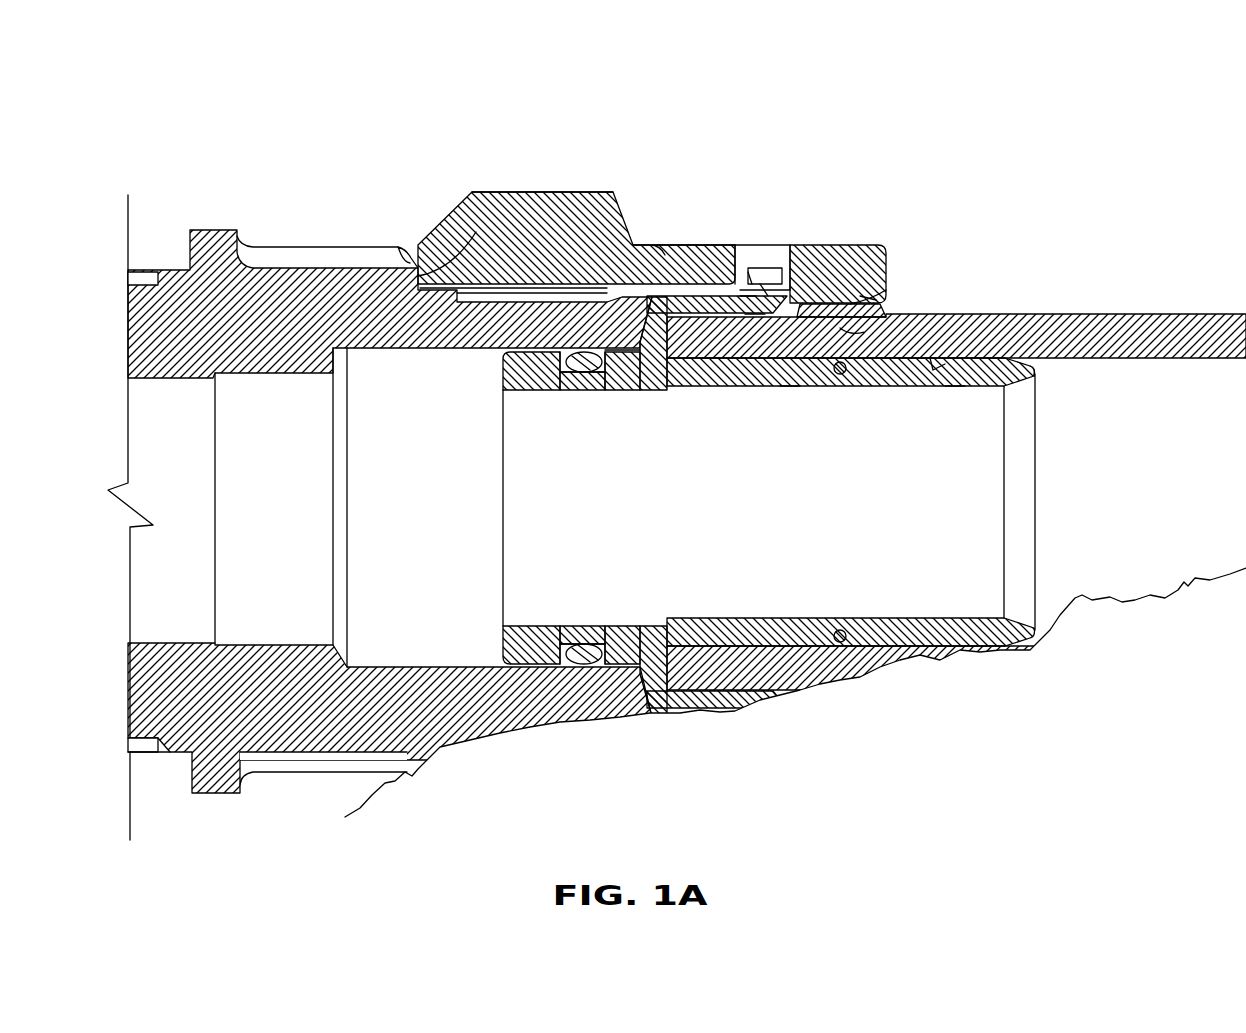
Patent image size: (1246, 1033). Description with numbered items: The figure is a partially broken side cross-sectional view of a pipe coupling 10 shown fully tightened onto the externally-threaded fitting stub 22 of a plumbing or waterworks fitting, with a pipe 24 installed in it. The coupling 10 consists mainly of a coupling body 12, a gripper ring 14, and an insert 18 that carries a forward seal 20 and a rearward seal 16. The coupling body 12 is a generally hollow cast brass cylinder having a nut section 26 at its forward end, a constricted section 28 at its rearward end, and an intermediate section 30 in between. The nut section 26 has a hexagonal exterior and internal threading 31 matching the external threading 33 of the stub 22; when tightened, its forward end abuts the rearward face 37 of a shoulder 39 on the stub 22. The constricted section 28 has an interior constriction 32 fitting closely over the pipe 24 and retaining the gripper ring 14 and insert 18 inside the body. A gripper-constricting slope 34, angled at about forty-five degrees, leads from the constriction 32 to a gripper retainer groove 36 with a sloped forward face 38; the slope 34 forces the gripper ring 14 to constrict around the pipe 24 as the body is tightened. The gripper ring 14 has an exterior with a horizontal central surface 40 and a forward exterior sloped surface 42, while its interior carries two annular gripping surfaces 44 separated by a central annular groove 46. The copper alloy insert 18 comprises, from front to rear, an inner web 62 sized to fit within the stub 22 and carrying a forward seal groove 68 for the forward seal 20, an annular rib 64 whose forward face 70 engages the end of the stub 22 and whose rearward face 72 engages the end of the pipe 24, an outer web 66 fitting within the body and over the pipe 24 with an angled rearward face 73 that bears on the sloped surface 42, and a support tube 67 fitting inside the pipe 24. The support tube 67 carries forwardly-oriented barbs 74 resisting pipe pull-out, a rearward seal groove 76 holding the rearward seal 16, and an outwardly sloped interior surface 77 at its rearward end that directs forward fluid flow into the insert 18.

The coupling 10 is at (828, 116).
The coupling body 12 is at (619, 250).
The gripper ring 14 is at (845, 297).
The rearward seal 16 is at (849, 384).
The insert 18 is at (528, 489).
The forward seal 20 is at (588, 364).
The fitting stub 22 is at (292, 296).
The pipe 24 is at (983, 325).
The nut section 26 is at (535, 232).
The constricted section 28 is at (823, 292).
The intermediate section 30 is at (668, 258).
The internal threading 31 is at (567, 293).
The interior constriction 32 is at (862, 306).
The external threading 33 is at (546, 290).
The gripper-constricting slope 34 is at (787, 262).
The gripper retainer groove 36 is at (760, 290).
The rearward face 37 is at (452, 270).
The sloped forward face 38 is at (748, 300).
The shoulder 39 is at (407, 270).
The horizontal central surface 40 is at (776, 290).
The forward exterior sloped surface 42 is at (766, 298).
The annular gripping surfaces 44 is at (862, 296).
The central annular groove 46 is at (858, 332).
The inner web 62 is at (537, 372).
The annular rib 64 is at (654, 356).
The outer web 66 is at (697, 296).
The support tube 67 is at (790, 380).
The forward seal groove 68 is at (607, 385).
The forward face 70 is at (618, 350).
The rearward face 72 is at (672, 340).
The rearward face 73 is at (753, 315).
The forwardly-oriented barbs 74 is at (955, 364).
The rearward seal groove 76 is at (840, 374).
The interior surface 77 is at (1018, 383).